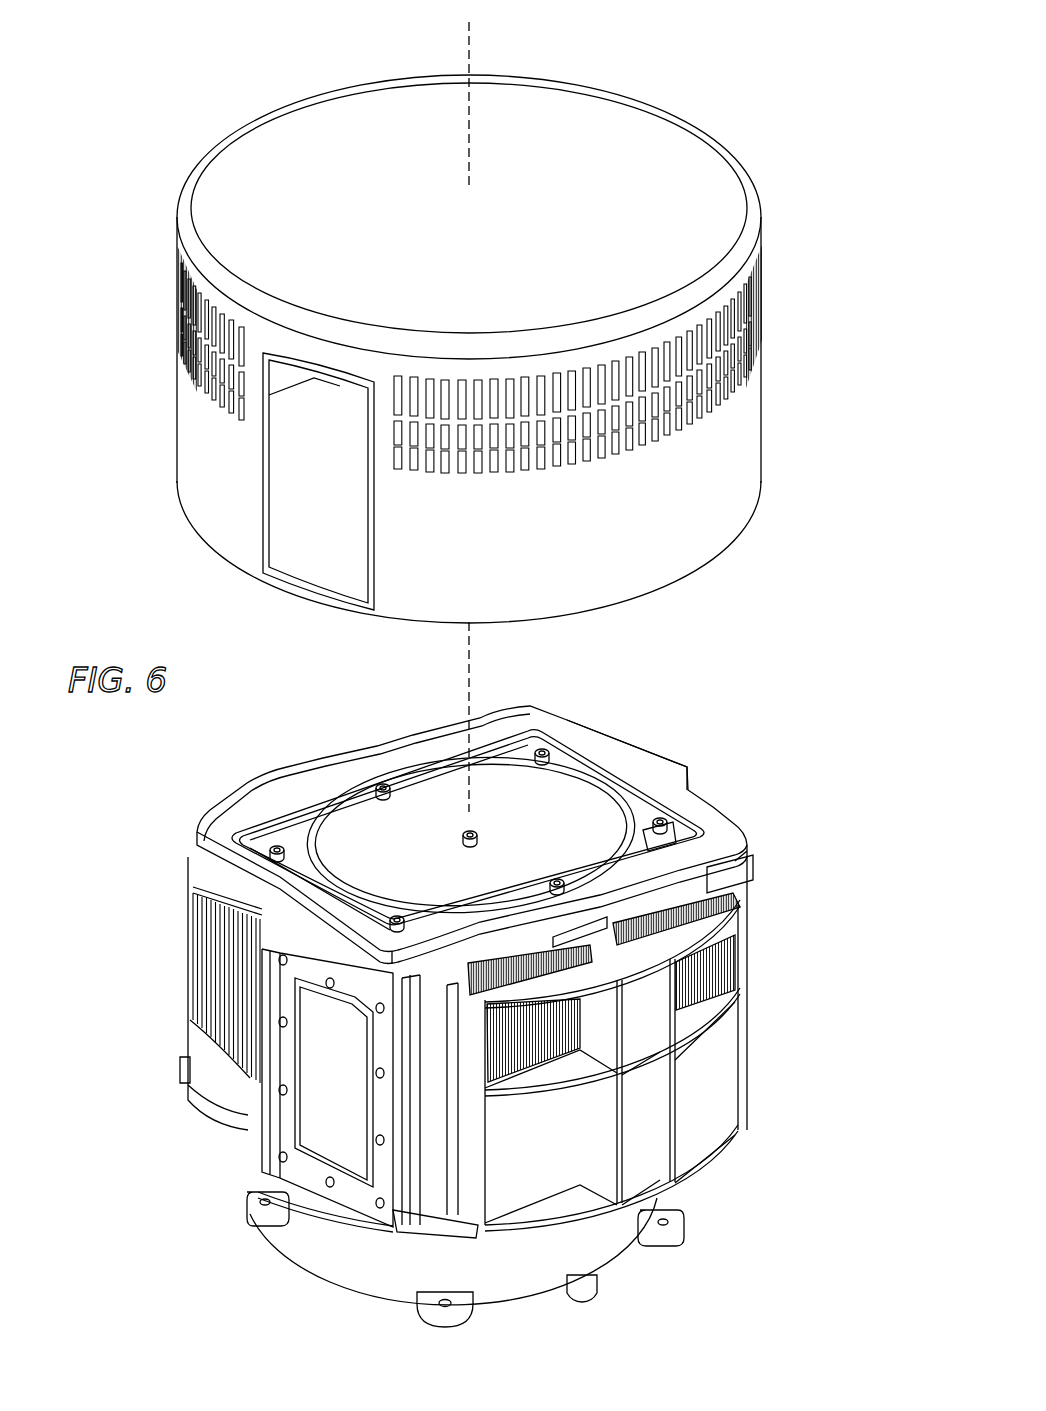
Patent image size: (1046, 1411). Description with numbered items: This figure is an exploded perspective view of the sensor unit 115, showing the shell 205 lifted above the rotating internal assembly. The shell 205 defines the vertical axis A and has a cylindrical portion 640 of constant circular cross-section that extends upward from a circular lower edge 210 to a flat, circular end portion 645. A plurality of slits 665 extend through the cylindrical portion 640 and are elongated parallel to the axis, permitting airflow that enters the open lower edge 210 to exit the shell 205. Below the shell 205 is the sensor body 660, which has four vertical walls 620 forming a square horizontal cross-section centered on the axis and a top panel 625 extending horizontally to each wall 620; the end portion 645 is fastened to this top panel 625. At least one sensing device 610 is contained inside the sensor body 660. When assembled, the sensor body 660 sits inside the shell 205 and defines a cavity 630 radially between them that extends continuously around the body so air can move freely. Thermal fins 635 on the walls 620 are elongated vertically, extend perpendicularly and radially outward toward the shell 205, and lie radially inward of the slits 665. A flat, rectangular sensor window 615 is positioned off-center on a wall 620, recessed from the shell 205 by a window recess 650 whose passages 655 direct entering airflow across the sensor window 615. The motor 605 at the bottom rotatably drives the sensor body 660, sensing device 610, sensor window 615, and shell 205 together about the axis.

The sensor unit 115 is at (203, 48).
The shell 205 is at (698, 118).
The end portion 645 is at (592, 103).
The cylindrical portion 640 is at (745, 438).
The slits 665 is at (762, 335).
The lower edge 210 is at (683, 578).
The sensor body 660 is at (704, 793).
The top panel 625 is at (445, 790).
The sensing device 610 is at (405, 890).
The window recesses 650 is at (648, 740).
The cavity 630 is at (752, 838).
The walls 620 is at (200, 1073).
The thermal fins 635 is at (205, 970).
The passages 655 is at (260, 1122).
The sensor window 615 is at (335, 1125).
The motor 605 is at (608, 1258).